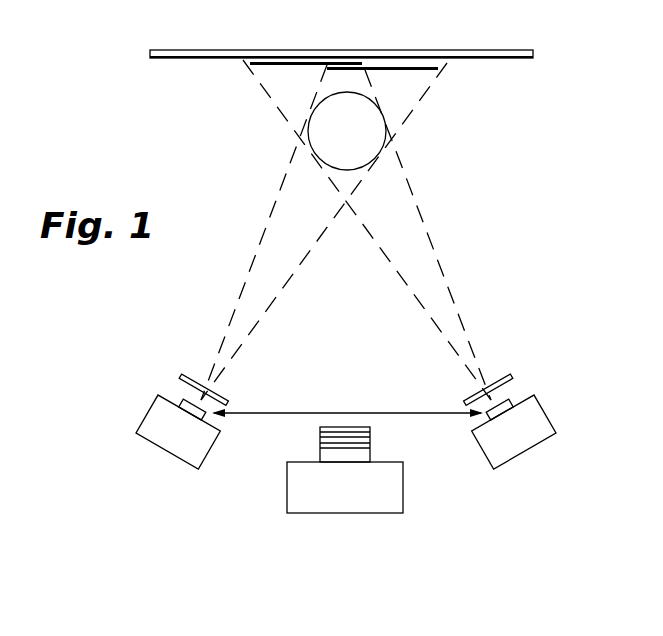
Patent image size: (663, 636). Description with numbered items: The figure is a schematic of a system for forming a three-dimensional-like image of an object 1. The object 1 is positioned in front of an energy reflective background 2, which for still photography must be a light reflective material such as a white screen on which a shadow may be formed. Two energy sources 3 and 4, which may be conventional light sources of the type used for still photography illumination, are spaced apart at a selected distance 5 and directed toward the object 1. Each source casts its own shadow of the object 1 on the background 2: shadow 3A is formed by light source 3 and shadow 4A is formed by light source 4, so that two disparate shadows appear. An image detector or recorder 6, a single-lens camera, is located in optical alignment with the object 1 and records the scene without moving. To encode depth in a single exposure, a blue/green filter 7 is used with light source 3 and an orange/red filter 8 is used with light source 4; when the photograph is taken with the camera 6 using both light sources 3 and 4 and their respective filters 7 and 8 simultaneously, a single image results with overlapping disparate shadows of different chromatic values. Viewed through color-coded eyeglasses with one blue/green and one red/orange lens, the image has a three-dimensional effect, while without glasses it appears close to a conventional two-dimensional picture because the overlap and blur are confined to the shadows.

The object 1 is at (353, 143).
The energy reflective background 2 is at (158, 50).
The energy source 3 is at (146, 436).
The shadow 3A is at (415, 72).
The energy source 4 is at (537, 435).
The shadow 4A is at (278, 65).
The selected distance 5 is at (392, 412).
The image detector or recorder 6 is at (393, 483).
The blue/green filter 7 is at (182, 377).
The orange/red filter 8 is at (511, 377).